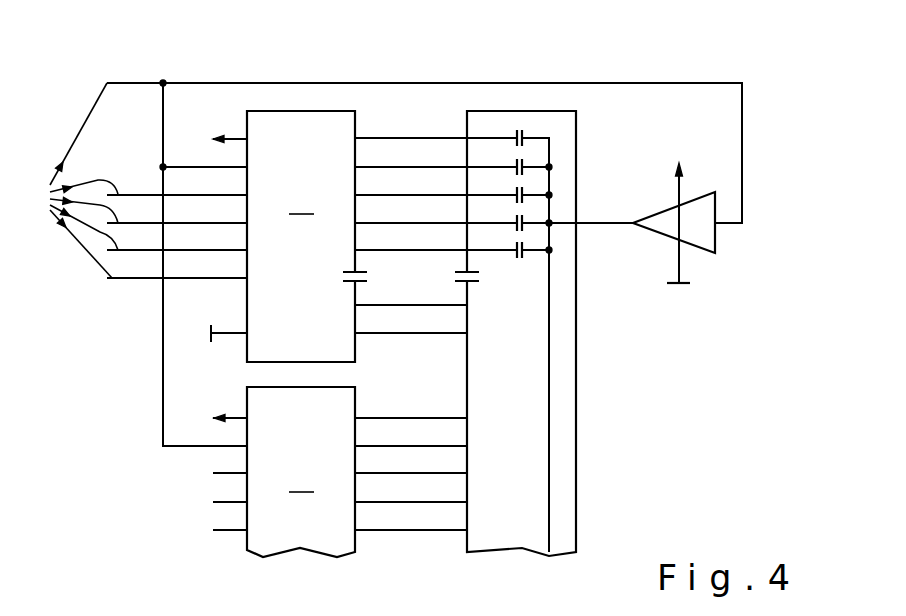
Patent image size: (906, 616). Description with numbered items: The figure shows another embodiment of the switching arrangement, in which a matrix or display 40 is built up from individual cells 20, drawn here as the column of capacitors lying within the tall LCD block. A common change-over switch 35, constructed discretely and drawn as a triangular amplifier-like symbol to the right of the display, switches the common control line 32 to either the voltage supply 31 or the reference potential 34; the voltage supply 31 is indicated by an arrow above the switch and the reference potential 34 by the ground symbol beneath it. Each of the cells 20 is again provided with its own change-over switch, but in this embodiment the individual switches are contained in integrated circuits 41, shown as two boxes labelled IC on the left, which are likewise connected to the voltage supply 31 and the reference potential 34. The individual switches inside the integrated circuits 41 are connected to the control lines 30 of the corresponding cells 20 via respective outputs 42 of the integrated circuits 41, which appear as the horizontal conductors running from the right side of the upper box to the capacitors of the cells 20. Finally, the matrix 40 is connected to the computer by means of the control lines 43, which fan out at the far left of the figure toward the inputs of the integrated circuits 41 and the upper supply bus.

The cell 20 is at (522, 134).
The control line 30 is at (495, 138).
The voltage supply 31 is at (213, 136).
The common control line 32 is at (595, 220).
The reference potential 34 is at (687, 285).
The common change-over switch 35 is at (706, 235).
The matrix 40 is at (561, 437).
The integrated circuit 41 is at (289, 334).
The output 42 is at (360, 132).
The control line 43 is at (134, 180).